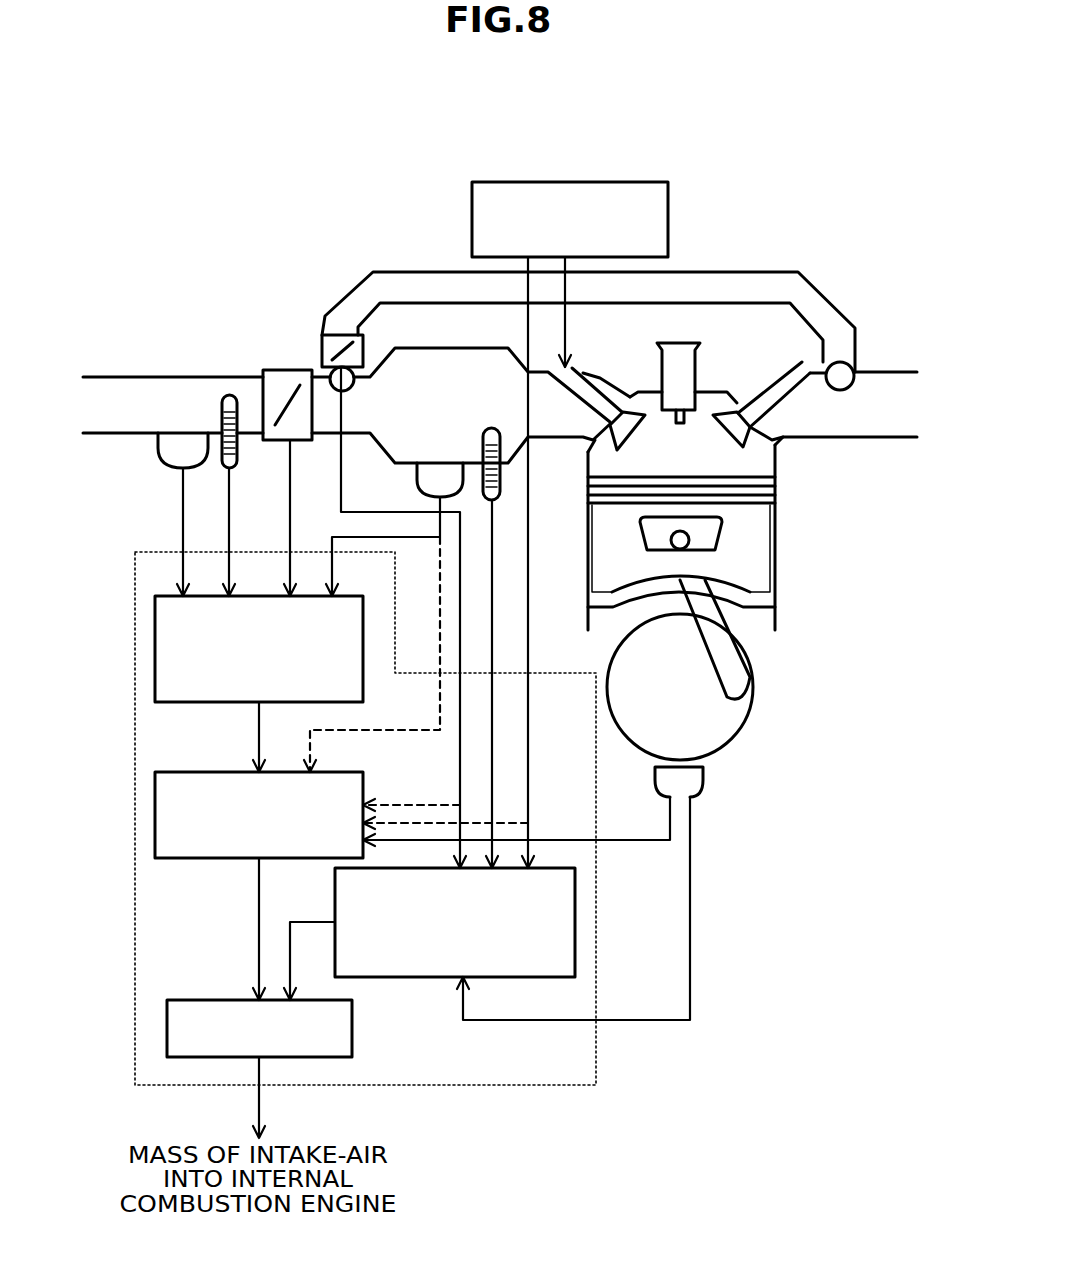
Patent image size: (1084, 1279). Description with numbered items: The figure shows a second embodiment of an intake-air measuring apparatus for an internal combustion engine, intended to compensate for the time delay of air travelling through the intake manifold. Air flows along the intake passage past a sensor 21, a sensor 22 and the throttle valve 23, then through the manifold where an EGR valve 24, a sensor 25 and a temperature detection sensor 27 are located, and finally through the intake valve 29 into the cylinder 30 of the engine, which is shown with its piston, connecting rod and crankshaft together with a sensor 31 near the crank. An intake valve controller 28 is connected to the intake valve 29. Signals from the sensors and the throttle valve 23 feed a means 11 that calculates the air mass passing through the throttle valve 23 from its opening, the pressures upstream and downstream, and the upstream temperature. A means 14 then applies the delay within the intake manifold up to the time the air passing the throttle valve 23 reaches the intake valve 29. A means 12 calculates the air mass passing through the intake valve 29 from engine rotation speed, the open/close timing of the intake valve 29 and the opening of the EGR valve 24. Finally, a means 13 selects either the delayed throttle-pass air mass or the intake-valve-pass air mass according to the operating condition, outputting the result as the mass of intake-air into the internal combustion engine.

The throttle pass air mass calculation means 11 is at (205, 702).
The intake valve pass air mass calculation means 12 is at (412, 977).
The selection means 13 is at (190, 1000).
The intake manifold delay means 14 is at (205, 858).
The intake air temperature sensor 21 is at (170, 452).
The air flow meter 22 is at (232, 395).
The throttle valve 23 is at (280, 375).
The EGR valve 24 is at (337, 338).
The intake manifold pressure sensor 25 is at (432, 475).
The temperature detection sensor 27 is at (487, 440).
The intake valve controller 28 is at (625, 182).
The intake valve 29 is at (590, 397).
The cylinder 30 is at (770, 465).
The crank angle sensor 31 is at (692, 784).